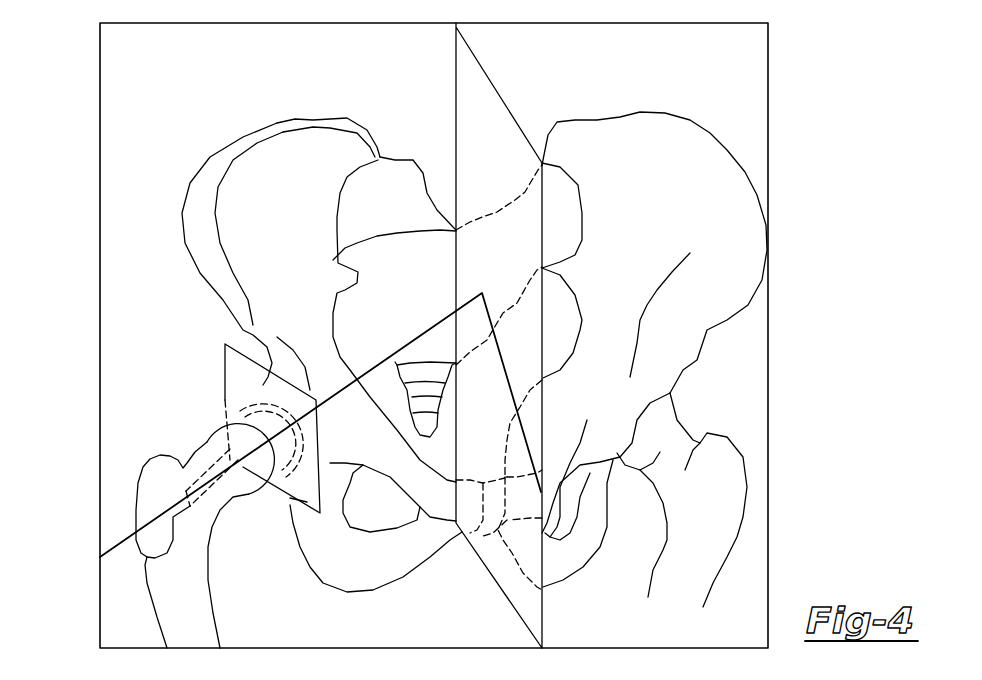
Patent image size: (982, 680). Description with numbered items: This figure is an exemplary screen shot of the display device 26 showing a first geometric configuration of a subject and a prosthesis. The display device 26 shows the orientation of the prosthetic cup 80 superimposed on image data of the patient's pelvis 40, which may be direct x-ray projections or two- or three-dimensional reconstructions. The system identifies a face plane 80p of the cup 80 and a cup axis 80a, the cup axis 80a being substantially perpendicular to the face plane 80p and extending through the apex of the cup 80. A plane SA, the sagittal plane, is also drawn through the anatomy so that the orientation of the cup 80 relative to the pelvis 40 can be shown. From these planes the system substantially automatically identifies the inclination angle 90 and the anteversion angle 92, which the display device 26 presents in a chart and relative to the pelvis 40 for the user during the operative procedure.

The display device 26 is at (770, 90).
The pelvis 40 is at (278, 133).
The prosthetic cup 80 is at (240, 393).
The cup axis 80a is at (157, 523).
The face plane 80p is at (293, 503).
The inclination angle 90 is at (110, 63).
The anteversion angle 92 is at (110, 100).
The plane SA is at (517, 133).